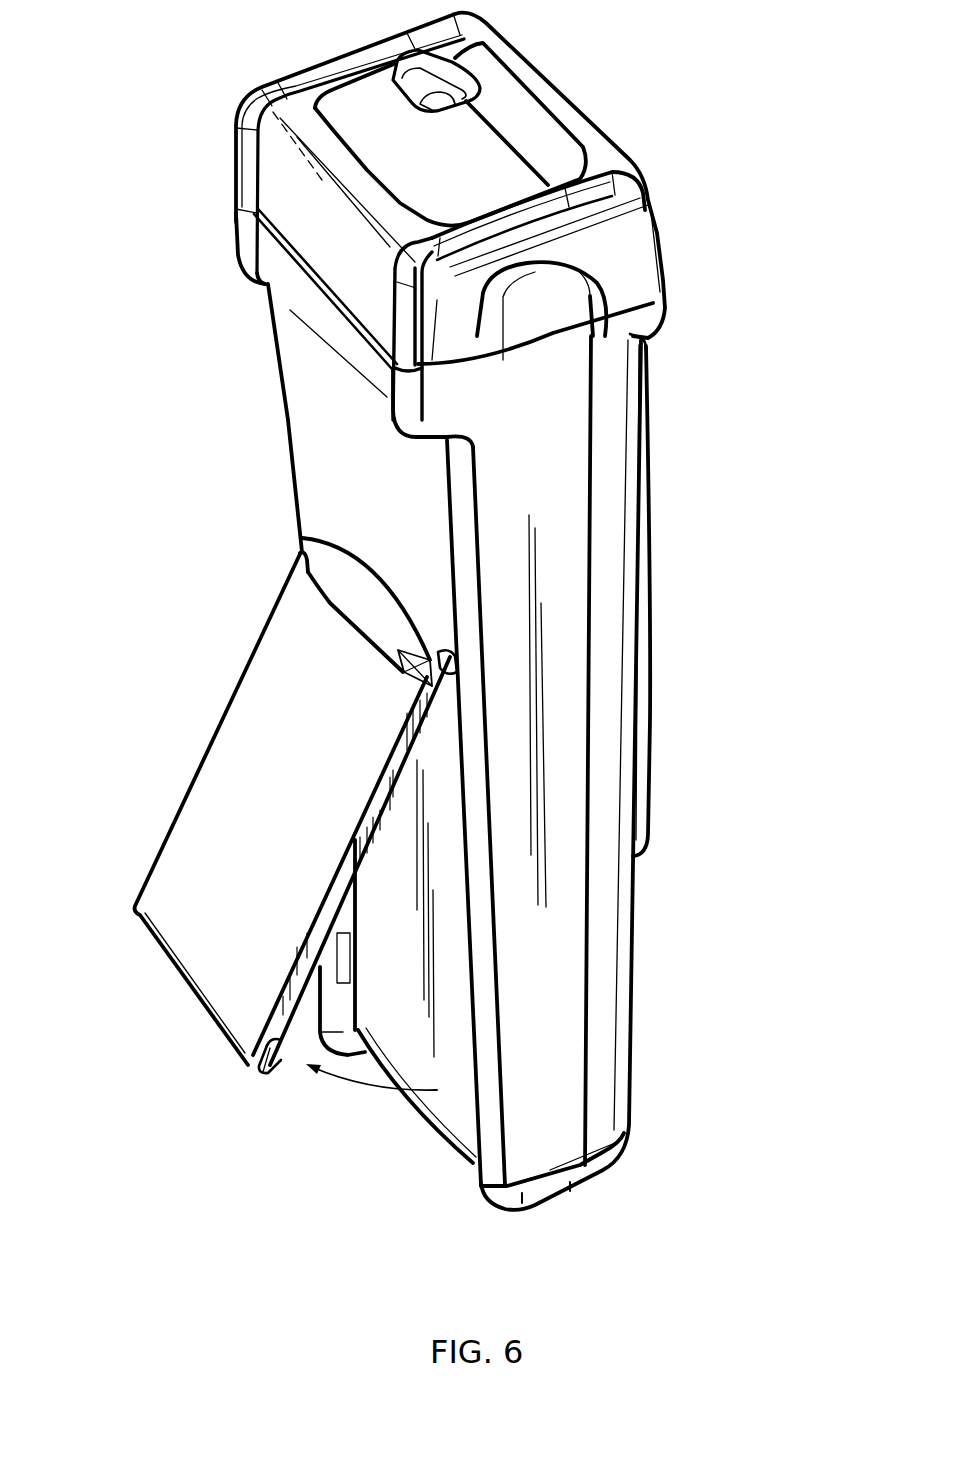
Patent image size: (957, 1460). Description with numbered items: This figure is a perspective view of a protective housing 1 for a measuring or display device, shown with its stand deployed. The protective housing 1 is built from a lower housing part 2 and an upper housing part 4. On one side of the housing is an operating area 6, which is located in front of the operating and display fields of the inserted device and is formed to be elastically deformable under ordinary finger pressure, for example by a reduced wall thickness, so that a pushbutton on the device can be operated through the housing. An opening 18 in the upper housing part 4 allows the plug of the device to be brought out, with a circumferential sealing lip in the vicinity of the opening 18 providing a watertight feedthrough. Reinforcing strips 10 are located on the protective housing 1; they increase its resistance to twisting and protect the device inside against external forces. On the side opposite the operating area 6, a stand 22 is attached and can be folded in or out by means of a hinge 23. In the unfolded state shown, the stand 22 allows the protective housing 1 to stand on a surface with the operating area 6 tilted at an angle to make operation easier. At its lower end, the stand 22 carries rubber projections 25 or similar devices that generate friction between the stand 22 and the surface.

The protective housing 1 is at (431, 607).
The lower housing part 2 is at (550, 1063).
The upper housing part 4 is at (627, 240).
The operating area 6 is at (650, 710).
The reinforcing strips 10 is at (244, 239).
The opening 18 is at (470, 80).
The stand 22 is at (223, 903).
The hinge 23 is at (302, 538).
The rubber projections 25 is at (262, 1076).